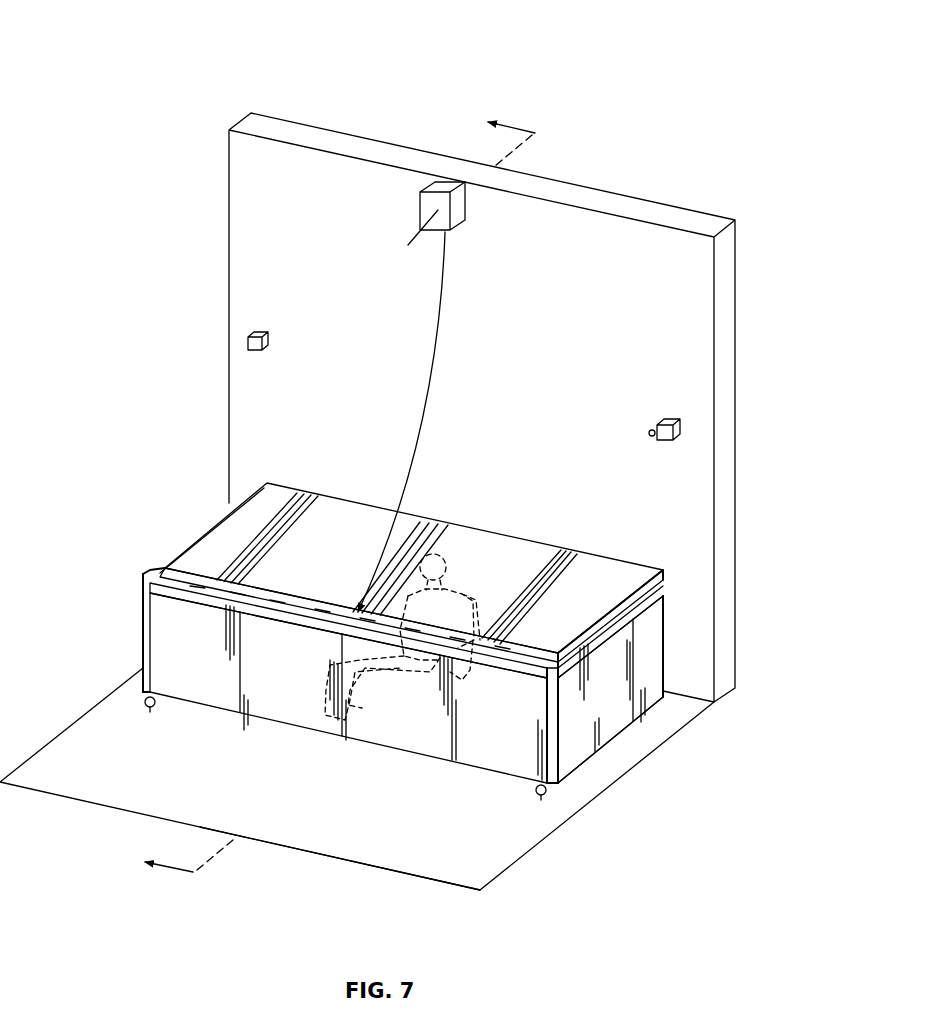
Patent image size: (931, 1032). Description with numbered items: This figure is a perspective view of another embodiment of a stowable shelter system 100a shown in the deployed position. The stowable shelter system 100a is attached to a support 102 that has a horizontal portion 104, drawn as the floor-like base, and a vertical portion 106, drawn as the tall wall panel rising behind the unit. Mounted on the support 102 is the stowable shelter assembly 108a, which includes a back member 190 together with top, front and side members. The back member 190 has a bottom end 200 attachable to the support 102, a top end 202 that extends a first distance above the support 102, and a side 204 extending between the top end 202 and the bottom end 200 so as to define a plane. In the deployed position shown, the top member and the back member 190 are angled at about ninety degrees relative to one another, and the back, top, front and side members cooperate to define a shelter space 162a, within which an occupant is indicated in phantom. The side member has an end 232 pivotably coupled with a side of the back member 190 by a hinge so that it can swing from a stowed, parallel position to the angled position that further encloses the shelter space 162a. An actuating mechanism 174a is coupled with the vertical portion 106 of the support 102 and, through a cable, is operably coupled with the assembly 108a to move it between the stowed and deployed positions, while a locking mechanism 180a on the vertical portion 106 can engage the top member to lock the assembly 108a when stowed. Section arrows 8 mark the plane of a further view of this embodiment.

The stowable shelter system 100a is at (130, 63).
The support 102 is at (75, 720).
The horizontal portion 104 is at (370, 866).
The vertical portion 106 is at (228, 390).
The stowable shelter assembly 108a is at (176, 550).
The shelter space 162a is at (262, 718).
The actuating mechanism 174a is at (418, 208).
The locking mechanism 180a is at (248, 340).
The back member 190 is at (663, 602).
The bottom end 200 is at (663, 695).
The top end 202 is at (665, 578).
The side 204 is at (663, 640).
The end 232 is at (558, 737).
The section line for FIG. 8 is at (331, 490).